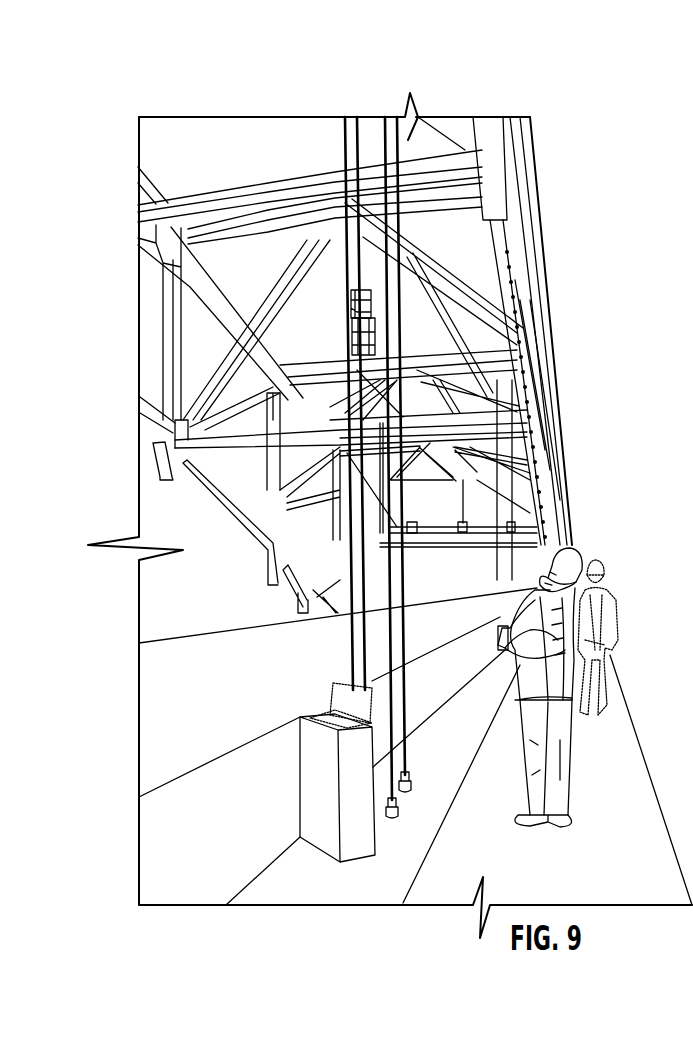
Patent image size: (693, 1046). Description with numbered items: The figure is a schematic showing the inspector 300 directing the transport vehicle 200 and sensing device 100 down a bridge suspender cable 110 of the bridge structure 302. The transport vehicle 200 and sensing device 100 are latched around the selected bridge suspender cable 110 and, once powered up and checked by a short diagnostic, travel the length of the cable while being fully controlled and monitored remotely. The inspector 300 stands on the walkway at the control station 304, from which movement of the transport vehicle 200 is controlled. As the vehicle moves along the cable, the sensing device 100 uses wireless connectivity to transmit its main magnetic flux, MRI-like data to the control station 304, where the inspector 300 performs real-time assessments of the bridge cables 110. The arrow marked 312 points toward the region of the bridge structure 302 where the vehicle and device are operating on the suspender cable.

The sensing device 100 is at (350, 295).
The bridge suspender cable 110 is at (341, 433).
The transport vehicle 200 is at (380, 328).
The inspector 300 is at (578, 560).
The bridge structure 302 is at (523, 162).
The control station 304 is at (330, 702).
The scaffold structure 312 is at (412, 330).